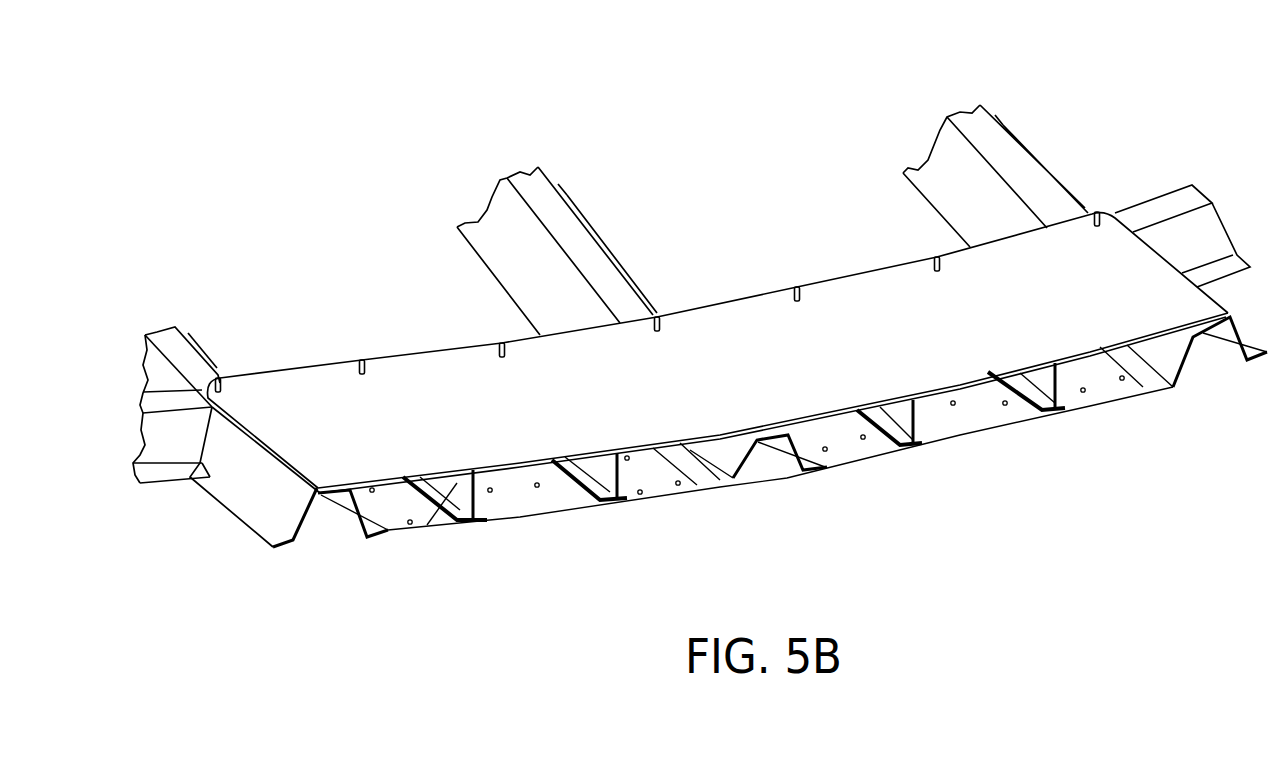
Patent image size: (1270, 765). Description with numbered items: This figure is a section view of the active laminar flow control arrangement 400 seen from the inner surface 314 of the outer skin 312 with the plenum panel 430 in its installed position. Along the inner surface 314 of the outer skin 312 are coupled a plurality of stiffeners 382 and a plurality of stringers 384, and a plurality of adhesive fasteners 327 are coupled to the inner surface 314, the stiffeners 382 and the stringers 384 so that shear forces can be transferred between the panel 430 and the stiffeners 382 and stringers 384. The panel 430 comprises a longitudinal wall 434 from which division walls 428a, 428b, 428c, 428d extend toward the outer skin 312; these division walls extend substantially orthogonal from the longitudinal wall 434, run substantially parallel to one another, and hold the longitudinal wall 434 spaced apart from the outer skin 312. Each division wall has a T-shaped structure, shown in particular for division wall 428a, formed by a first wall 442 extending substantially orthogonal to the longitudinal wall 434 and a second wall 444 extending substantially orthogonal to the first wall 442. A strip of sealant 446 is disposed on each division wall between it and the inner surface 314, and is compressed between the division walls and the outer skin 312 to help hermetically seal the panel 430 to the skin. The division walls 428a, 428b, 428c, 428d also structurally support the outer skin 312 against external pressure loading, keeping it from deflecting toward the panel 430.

The active laminar flow control arrangement 400 is at (636, 133).
The outer skin 312 is at (560, 518).
The inner surface 314 is at (975, 432).
The adhesive fasteners 327 is at (220, 377).
The stiffeners 382 is at (178, 350).
The stringers 384 is at (1175, 195).
The plenum panel 430 is at (732, 336).
The longitudinal wall 434 is at (847, 317).
The first wall 442 is at (457, 485).
The second wall 444 is at (447, 518).
The strip of sealant 446 is at (473, 522).
The division wall 428a is at (487, 498).
The division wall 428b is at (623, 476).
The division wall 428c is at (920, 422).
The division wall 428d is at (1063, 398).